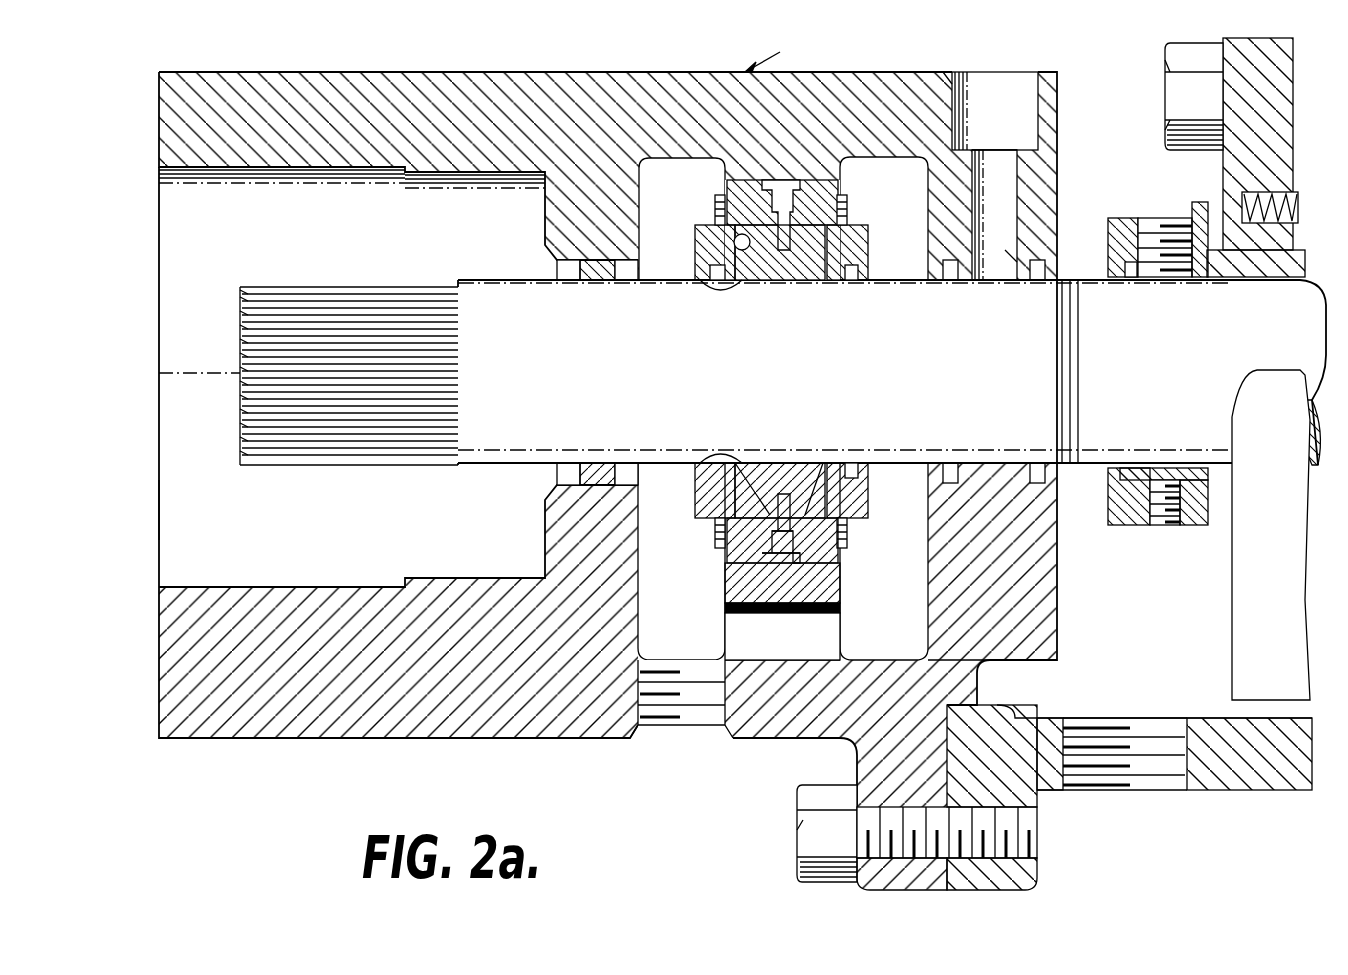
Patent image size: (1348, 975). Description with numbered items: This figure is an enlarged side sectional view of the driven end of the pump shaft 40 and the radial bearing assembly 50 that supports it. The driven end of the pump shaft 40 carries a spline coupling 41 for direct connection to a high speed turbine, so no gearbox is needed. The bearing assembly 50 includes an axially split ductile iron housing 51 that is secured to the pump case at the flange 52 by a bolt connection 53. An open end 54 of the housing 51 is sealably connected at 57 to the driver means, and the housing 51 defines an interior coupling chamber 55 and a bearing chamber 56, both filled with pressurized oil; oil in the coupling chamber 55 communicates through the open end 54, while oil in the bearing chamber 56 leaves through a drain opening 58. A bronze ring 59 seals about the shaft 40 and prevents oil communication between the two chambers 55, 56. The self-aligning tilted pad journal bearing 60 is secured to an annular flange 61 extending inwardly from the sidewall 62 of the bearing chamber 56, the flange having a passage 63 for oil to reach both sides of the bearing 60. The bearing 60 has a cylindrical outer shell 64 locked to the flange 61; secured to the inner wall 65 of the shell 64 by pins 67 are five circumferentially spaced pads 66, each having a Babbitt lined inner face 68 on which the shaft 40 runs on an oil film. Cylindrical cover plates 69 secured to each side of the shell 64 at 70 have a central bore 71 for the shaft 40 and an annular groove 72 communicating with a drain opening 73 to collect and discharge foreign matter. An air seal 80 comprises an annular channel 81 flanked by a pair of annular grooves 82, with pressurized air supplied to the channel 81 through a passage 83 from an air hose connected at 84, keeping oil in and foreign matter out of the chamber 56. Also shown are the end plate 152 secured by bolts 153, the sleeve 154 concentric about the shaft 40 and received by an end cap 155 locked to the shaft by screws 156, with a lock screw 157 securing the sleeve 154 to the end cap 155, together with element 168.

The pump shaft 40 is at (798, 357).
The spline coupling 41 is at (330, 296).
The radial bearing assembly 50 is at (776, 52).
The housing 51 is at (300, 735).
The flange 52 is at (893, 880).
The bolt connection 53 is at (797, 838).
The open end 54 is at (159, 430).
The coupling chamber 55 is at (159, 500).
The bearing chamber 56 is at (660, 172).
The sealed connection 57 is at (160, 128).
The drain opening 58 is at (697, 712).
The bronze ring 59 is at (565, 484).
The bearing 60 is at (890, 205).
The annular flange 61 is at (820, 575).
The sidewall 62 is at (885, 160).
The passage 63 is at (808, 637).
The cylindrical outer shell 64 is at (735, 558).
The inner wall 65 is at (735, 240).
The pads 66 is at (810, 268).
The pins 67 is at (780, 240).
The inner face 68 is at (712, 290).
The cover plates 69 is at (862, 255).
The securing points 70 is at (720, 205).
The central bore 71 is at (870, 284).
The annular groove 72 is at (705, 255).
The drain opening 73 is at (850, 500).
The air seal 80 is at (1000, 245).
The annular channel 81 is at (998, 284).
The annular grooves 82 is at (950, 284).
The passage 83 is at (995, 183).
The air hose connection 84 is at (1028, 95).
The end plate 152 is at (1235, 585).
The bolts 153 is at (1170, 60).
The sleeve 154 is at (1255, 270).
The end cap 155 is at (1132, 522).
The screws 156 is at (1145, 222).
The lock screw 157 is at (1180, 528).
The spring 168 is at (1240, 195).